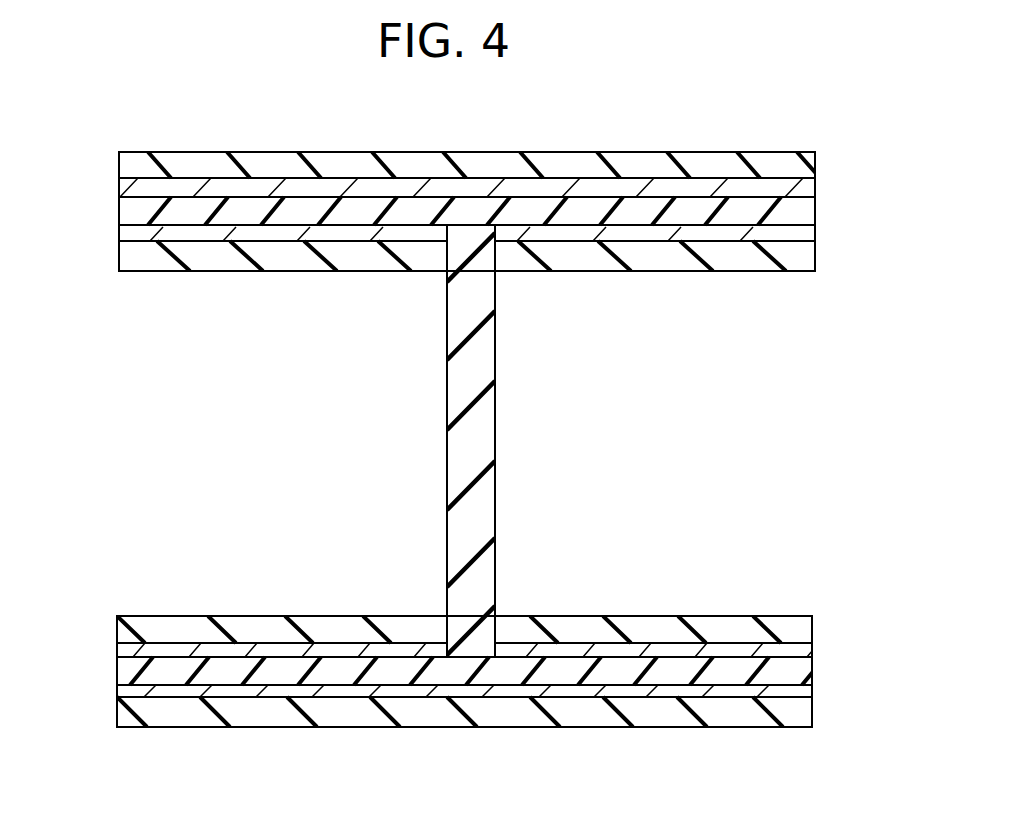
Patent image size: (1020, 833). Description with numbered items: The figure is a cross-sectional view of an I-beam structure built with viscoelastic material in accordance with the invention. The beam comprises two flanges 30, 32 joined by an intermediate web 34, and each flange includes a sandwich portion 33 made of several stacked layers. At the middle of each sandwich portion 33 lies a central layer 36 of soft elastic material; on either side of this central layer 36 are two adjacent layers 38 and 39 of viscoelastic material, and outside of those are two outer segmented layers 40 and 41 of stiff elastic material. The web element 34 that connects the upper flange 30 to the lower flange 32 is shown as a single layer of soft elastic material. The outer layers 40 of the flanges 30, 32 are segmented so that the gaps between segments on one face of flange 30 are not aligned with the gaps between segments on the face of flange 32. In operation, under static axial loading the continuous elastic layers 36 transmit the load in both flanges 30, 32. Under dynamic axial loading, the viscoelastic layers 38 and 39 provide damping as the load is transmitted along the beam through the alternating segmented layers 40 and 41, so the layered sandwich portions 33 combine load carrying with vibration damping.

The flange 30 is at (799, 152).
The flange 32 is at (787, 728).
The sandwich portion 33 is at (818, 181).
The intermediate web 34 is at (496, 498).
The central layer 36 is at (118, 208).
The adjacent layer of viscoelastic material 38 is at (817, 185).
The adjacent layer of viscoelastic material 39 is at (819, 240).
The outer segmented layer 40 is at (817, 262).
The outer segmented layer 41 is at (177, 151).